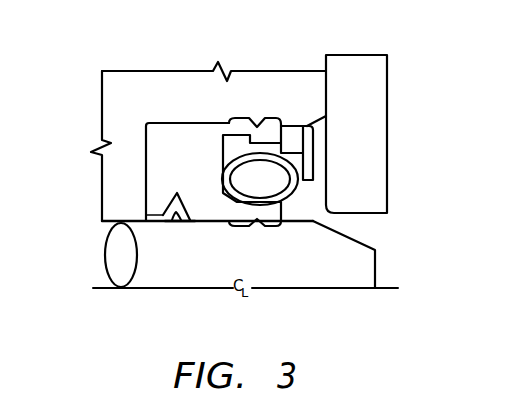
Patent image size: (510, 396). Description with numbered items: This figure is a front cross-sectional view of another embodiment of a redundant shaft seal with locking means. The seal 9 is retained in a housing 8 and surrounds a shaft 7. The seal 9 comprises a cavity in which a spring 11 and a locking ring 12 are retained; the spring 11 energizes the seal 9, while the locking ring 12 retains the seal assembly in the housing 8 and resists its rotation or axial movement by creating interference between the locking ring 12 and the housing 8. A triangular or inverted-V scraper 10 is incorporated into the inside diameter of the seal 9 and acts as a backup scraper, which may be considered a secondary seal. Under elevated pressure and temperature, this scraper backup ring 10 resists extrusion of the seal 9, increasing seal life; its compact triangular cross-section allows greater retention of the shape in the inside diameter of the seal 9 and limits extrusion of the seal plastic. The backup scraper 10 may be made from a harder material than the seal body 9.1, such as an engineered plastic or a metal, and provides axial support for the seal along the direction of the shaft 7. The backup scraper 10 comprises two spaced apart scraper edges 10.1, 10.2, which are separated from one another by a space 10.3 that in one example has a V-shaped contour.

The shaft 7 is at (352, 270).
The housing 8 is at (131, 88).
The seal 9 is at (163, 157).
The seal body 9.1 is at (205, 147).
The scraper 10 is at (180, 178).
The scraper edge 10.1 is at (167, 222).
The scraper edge 10.2 is at (183, 223).
The space 10.3 is at (175, 223).
The spring 11 is at (312, 193).
The locking ring 12 is at (314, 147).